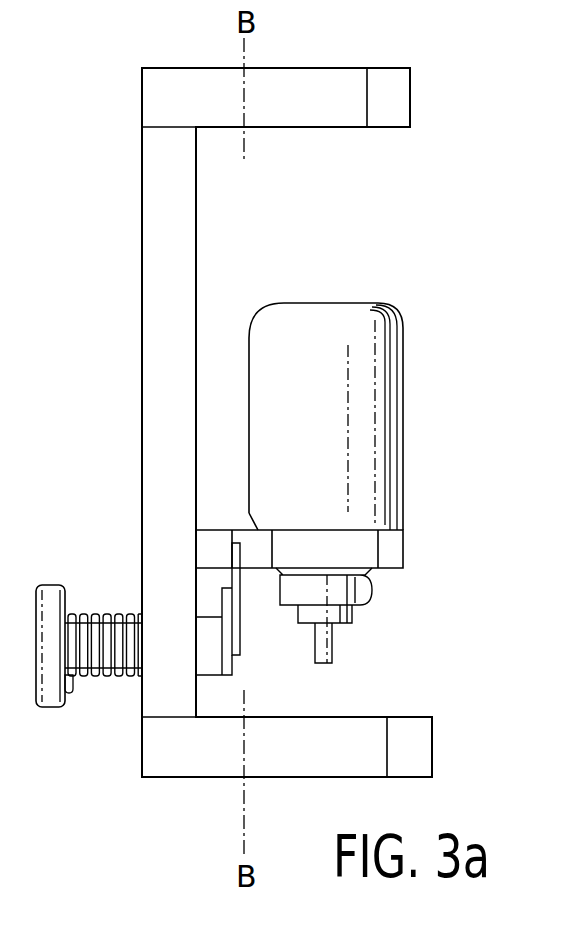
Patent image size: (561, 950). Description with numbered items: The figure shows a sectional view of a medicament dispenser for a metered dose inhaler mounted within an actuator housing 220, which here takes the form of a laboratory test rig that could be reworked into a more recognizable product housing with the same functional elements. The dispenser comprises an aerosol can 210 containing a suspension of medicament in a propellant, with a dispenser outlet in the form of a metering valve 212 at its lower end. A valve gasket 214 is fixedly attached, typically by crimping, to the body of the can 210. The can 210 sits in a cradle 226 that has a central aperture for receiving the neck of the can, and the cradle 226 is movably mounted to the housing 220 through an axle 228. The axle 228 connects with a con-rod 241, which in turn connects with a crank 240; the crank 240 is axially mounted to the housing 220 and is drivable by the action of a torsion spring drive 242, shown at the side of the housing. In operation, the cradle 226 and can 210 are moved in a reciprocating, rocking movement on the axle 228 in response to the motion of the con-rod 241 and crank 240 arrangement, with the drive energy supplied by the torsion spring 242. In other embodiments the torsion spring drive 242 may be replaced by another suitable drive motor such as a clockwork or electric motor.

The aerosol can 210 is at (400, 338).
The metering valve 212 is at (330, 643).
The valve gasket 214 is at (355, 590).
The actuator housing 220 is at (156, 260).
The cradle 226 is at (395, 550).
The axle 228 is at (213, 557).
The crank 240 is at (218, 600).
The con-rod 241 is at (240, 608).
The torsion spring drive 242 is at (105, 675).